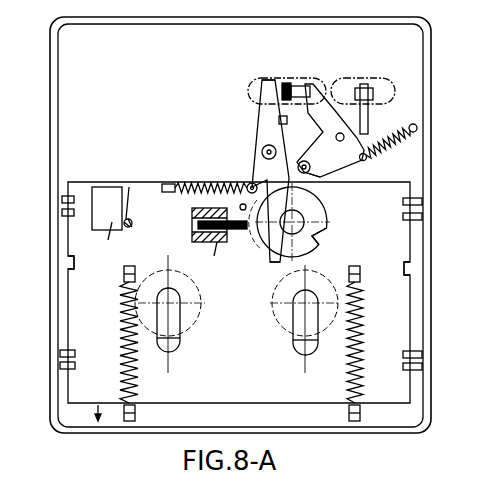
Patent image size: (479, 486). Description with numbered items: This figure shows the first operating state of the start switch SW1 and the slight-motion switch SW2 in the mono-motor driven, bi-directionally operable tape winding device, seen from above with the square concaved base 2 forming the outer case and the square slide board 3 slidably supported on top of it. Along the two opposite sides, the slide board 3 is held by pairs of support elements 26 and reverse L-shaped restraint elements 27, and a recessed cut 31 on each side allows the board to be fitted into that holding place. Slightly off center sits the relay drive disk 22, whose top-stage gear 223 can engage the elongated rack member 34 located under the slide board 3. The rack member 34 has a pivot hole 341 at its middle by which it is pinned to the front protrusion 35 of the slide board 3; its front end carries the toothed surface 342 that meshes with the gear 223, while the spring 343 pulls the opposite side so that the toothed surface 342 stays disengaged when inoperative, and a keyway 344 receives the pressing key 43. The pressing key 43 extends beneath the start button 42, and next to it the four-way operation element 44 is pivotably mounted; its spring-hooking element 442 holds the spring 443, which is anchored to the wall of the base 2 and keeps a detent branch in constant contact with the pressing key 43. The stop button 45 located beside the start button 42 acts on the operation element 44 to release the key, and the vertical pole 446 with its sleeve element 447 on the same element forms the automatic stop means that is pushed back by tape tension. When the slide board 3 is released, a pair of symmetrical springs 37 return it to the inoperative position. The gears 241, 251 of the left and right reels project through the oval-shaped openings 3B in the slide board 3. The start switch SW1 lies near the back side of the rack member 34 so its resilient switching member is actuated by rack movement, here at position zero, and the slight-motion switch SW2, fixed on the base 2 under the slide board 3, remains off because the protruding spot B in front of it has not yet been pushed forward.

The base 2 is at (57, 113).
The slide board 3 is at (128, 186).
The support element 26 is at (62, 199).
The restraint element 27 is at (62, 212).
The recessed cut 31 is at (68, 263).
The slight-motion start switch SW2 is at (105, 235).
The protruding spot B is at (134, 221).
The spring 343 is at (212, 183).
The start switch SW1 is at (219, 251).
The elongated rack member 34 is at (258, 177).
The pivot hole 341 is at (262, 150).
The toothed surface 342 is at (271, 264).
The keyway 344 is at (278, 117).
The front protrusion 35 is at (288, 124).
The relay drive disk 22 is at (318, 212).
The gear 223 is at (320, 238).
The start button 42 is at (258, 77).
The pressing key 43 is at (298, 84).
The four-way operation element 44 is at (317, 83).
The stop button 45 is at (359, 84).
The sleeve element 447 is at (311, 167).
The vertical pole 446 is at (317, 179).
The spring-hooking element 442 is at (364, 162).
The spring 443 is at (382, 152).
The gear of left reel 241 is at (192, 318).
The gear of right reel 251 is at (288, 326).
The oval-shaped opening 3B is at (172, 345).
The spring 37 is at (128, 367).